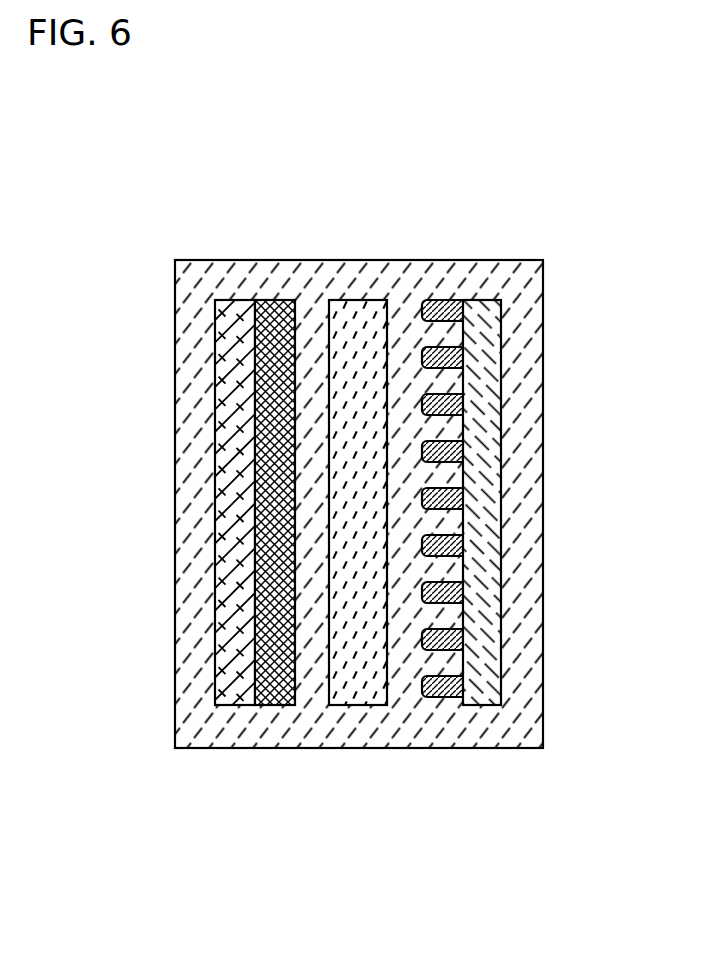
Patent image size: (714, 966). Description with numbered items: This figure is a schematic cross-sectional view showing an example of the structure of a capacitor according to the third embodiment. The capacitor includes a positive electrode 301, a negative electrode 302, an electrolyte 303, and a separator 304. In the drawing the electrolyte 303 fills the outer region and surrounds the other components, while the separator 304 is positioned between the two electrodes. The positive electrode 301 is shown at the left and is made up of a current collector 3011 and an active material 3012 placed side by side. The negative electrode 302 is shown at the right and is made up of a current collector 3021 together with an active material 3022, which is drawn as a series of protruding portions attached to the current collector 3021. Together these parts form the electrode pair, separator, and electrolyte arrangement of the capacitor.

The electrolyte 303 is at (199, 275).
The positive electrode 301 is at (259, 591).
The current collector 3011 is at (233, 688).
The active material 3012 is at (272, 688).
The separator 304 is at (357, 690).
The negative electrode 302 is at (471, 601).
The current collector 3021 is at (486, 688).
The active material 3022 is at (444, 695).